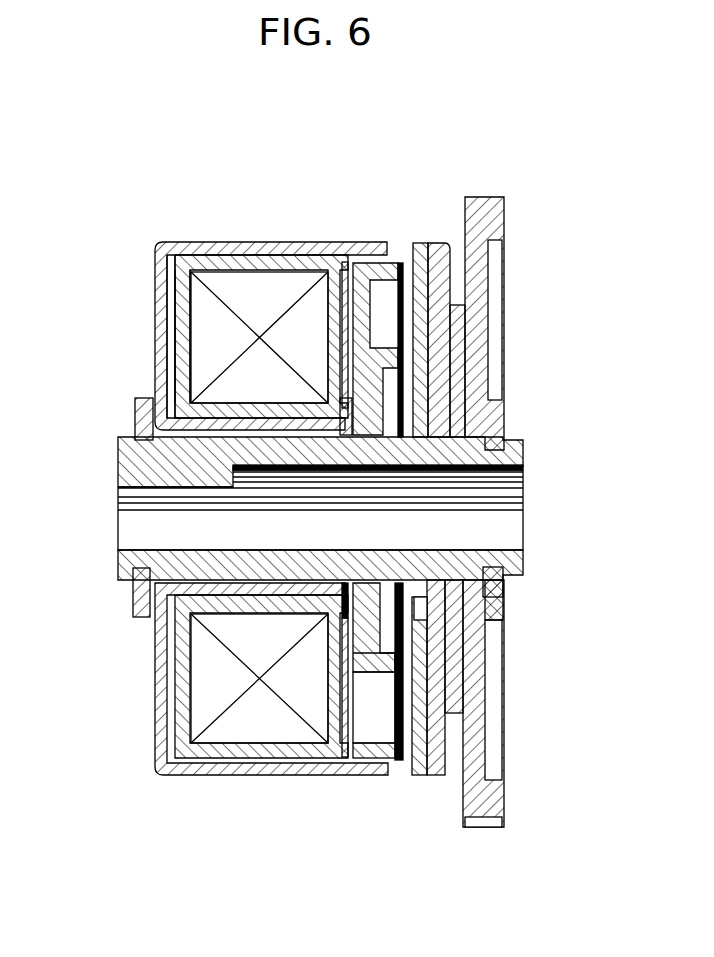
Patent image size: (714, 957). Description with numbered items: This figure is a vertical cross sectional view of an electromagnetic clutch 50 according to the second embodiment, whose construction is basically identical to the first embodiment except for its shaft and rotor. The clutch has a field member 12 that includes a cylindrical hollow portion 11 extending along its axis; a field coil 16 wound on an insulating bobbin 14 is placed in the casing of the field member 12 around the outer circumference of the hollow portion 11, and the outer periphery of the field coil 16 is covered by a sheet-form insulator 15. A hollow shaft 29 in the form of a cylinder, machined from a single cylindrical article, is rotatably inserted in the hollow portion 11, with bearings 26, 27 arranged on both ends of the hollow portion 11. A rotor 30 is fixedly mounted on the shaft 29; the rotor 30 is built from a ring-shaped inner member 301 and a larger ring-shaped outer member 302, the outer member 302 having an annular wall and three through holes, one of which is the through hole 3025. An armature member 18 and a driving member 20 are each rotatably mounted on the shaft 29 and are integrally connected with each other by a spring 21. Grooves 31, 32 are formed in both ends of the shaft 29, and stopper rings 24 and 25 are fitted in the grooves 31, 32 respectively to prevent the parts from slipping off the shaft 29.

The electromagnetic clutch 50 is at (352, 140).
The hollow portion 11 is at (262, 422).
The field member 12 is at (226, 242).
The bobbin 14 is at (178, 362).
The insulator 15 is at (302, 262).
The field coil 16 is at (177, 307).
The armature member 18 is at (412, 768).
The driving member 20 is at (490, 804).
The spring 21 is at (433, 780).
The stopper ring 24 is at (133, 612).
The stopper ring 25 is at (504, 612).
The bearing 26 is at (172, 487).
The bearing 27 is at (345, 487).
The shaft 29 is at (120, 455).
The rotor 30 is at (400, 264).
The groove 31 is at (131, 585).
The groove 32 is at (504, 596).
The inner member 301 is at (406, 475).
The outer member 302 is at (358, 300).
The through hole 3025 is at (362, 742).